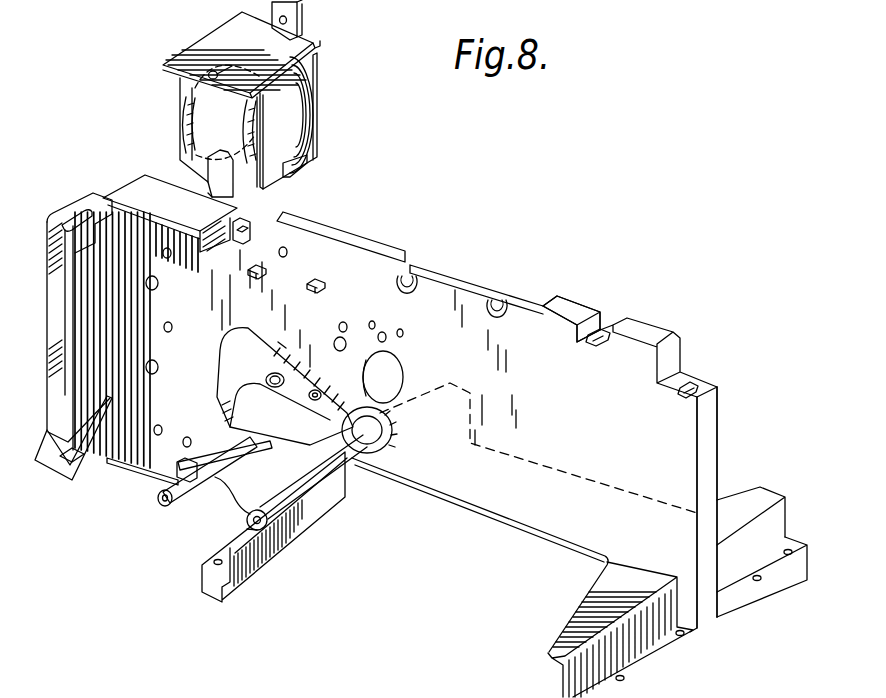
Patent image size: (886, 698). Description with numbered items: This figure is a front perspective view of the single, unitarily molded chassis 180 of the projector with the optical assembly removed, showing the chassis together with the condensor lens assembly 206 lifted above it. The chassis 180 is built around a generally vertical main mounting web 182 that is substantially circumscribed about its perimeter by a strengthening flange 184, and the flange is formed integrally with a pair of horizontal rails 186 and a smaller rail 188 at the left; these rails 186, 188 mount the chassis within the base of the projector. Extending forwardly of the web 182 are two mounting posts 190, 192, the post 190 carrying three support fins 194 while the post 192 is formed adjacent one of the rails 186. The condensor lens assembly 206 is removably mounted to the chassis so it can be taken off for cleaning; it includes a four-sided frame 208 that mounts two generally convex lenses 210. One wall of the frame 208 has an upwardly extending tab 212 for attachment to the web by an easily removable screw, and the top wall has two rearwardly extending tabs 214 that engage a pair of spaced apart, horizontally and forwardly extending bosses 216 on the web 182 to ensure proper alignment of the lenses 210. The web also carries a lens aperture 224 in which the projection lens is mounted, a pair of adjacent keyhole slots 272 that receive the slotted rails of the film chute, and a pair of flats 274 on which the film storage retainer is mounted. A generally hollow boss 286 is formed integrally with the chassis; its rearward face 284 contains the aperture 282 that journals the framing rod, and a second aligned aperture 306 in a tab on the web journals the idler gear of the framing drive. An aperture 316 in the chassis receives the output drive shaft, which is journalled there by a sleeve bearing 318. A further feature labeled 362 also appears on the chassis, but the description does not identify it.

The chassis 180 is at (575, 285).
The main mounting web 182 is at (587, 408).
The strengthening flange 184 is at (713, 424).
The horizontal rails 186 is at (750, 602).
The smaller rail 188 is at (55, 460).
The mounting post 190 is at (160, 489).
The mounting post 192 is at (240, 517).
The support fins 194 is at (248, 452).
The condensor lens assembly 206 is at (188, 44).
The four-sided frame 208 is at (164, 61).
The convex lenses 210 is at (186, 124).
The upwardly extending tab 212 is at (300, 18).
The rearwardly extending tabs 214 is at (248, 13).
The bosses 216 is at (313, 280).
The lens aperture 224 is at (392, 380).
The keyhole slots 272 is at (503, 307).
The flats 274 is at (606, 335).
The aperture 282 is at (275, 367).
The rearward face 284 is at (283, 344).
The hollow boss 286 is at (296, 424).
The second aligned aperture 306 is at (340, 384).
The aperture 316 is at (390, 438).
The sleeve bearing 318 is at (388, 465).
The block 362 is at (738, 497).